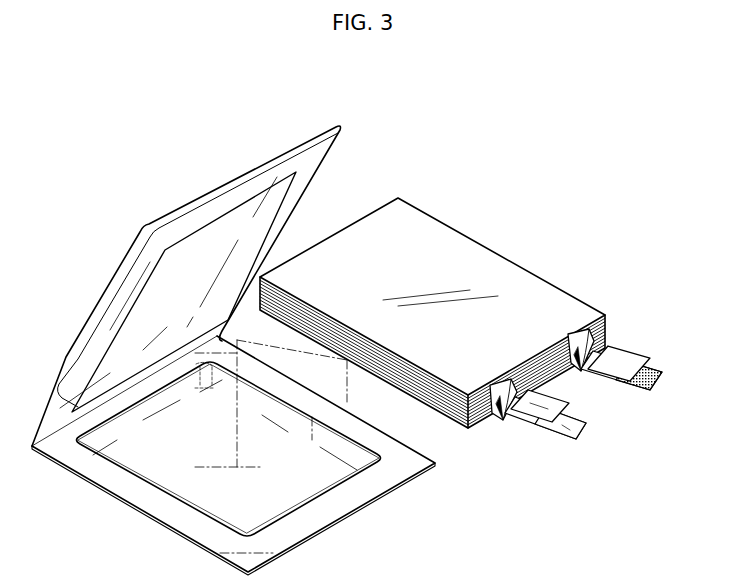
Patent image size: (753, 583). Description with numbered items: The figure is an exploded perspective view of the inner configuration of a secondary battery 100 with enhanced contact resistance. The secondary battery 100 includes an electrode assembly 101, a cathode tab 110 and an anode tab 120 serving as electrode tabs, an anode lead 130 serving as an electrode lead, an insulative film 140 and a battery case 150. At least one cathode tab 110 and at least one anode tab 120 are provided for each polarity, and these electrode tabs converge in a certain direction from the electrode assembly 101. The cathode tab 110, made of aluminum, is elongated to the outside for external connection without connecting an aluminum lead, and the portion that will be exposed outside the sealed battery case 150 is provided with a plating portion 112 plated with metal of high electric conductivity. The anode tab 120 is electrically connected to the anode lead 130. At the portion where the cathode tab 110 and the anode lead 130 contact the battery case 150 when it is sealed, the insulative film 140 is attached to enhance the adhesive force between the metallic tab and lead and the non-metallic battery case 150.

The secondary battery 100 is at (445, 112).
The electrode assembly 101 is at (513, 228).
The cathode tab 110 is at (592, 343).
The plating portion 112 is at (652, 378).
The anode tab 120 is at (493, 423).
The anode lead 130 is at (555, 430).
The insulative film 140 is at (630, 360).
The battery case 150 is at (119, 506).